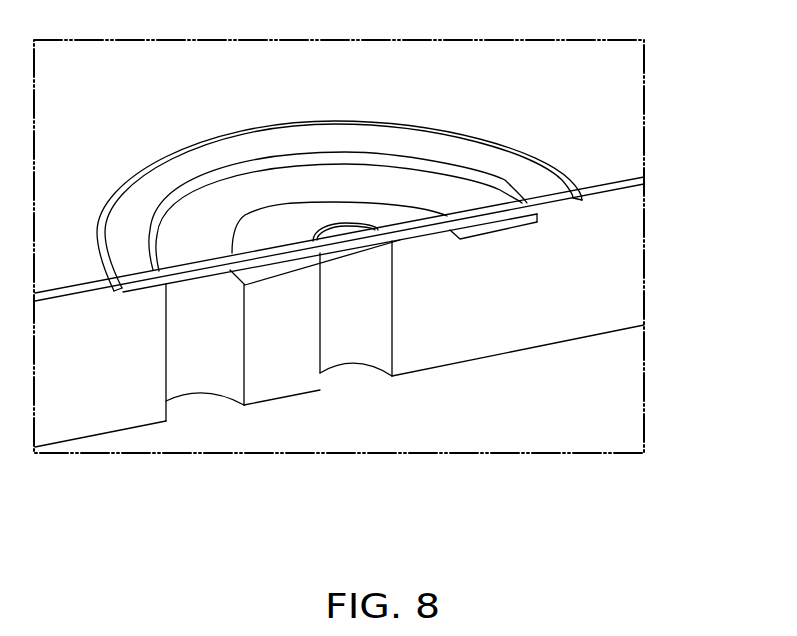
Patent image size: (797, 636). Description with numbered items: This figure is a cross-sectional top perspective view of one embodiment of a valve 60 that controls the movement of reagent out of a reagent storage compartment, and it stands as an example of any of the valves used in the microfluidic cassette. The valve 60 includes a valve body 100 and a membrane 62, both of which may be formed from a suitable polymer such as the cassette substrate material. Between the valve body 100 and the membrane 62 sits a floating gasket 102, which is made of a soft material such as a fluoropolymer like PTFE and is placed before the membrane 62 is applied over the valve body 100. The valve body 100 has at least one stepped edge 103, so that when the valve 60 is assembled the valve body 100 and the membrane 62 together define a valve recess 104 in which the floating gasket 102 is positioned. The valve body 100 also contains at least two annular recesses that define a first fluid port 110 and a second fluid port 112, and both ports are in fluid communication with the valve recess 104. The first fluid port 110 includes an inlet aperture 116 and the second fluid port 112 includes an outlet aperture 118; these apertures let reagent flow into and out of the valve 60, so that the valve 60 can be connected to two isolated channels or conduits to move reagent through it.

The valve 60 is at (680, 206).
The membrane 62 is at (540, 182).
The valve body 100 is at (615, 260).
The floating gasket 102 is at (487, 222).
The stepped edge 103 is at (502, 228).
The valve recess 104 is at (520, 218).
The first fluid port 110 is at (200, 348).
The second fluid port 112 is at (354, 340).
The inlet aperture 116 is at (390, 379).
The outlet aperture 118 is at (167, 425).